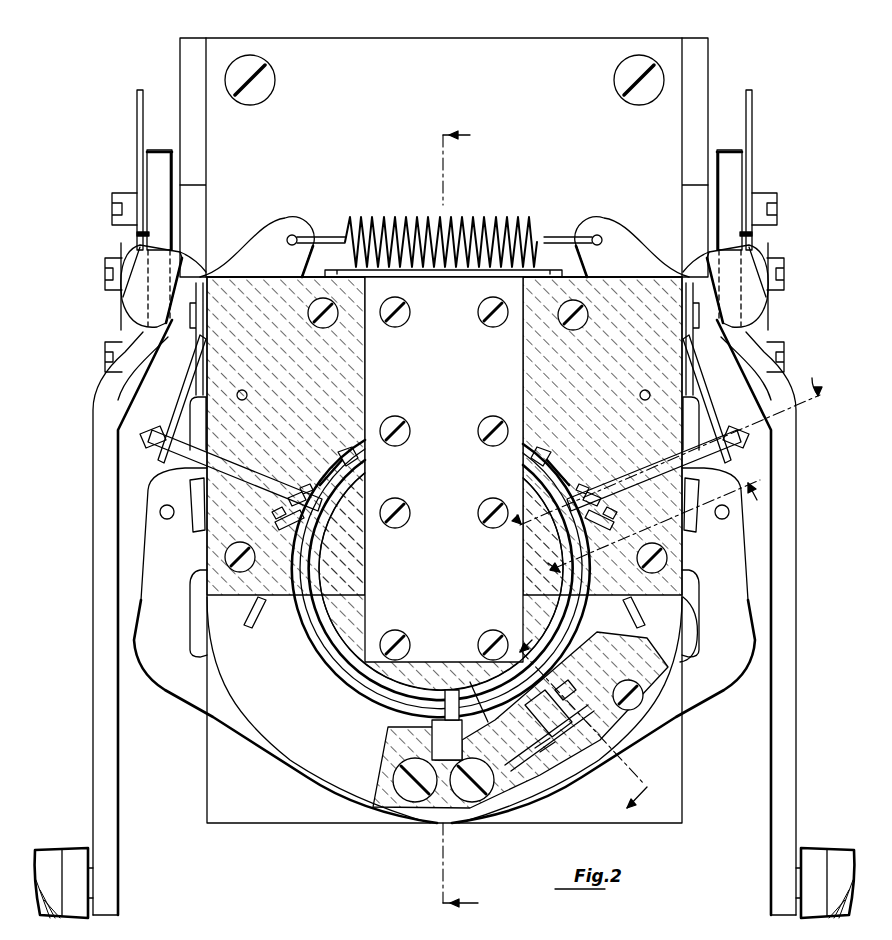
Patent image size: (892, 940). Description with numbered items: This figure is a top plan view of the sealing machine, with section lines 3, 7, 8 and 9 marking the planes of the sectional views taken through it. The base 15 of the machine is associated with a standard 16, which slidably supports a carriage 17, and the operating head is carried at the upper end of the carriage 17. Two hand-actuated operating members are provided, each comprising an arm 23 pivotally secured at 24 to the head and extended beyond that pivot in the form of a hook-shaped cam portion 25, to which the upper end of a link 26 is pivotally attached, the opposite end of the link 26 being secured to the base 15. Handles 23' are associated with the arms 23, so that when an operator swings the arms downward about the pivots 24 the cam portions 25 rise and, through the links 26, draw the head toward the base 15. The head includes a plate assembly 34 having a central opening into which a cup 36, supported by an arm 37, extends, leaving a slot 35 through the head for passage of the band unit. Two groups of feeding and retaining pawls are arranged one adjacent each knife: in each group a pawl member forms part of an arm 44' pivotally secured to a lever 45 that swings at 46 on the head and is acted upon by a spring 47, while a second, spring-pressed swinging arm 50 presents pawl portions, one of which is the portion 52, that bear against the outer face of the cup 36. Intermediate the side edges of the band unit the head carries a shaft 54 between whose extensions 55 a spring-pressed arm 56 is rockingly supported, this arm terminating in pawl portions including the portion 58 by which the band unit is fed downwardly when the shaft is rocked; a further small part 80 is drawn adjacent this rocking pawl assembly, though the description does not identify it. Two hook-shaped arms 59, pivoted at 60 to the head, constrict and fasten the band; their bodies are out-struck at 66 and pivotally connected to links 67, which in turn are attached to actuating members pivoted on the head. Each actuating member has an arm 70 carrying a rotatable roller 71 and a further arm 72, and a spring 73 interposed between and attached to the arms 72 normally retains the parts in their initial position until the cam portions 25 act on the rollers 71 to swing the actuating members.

The section line 3- 3 is at (469, 519).
The section line 7- 7 is at (666, 441).
The section line 8- 8 is at (593, 712).
The section line 9- 9 is at (649, 516).
The base 15 is at (444, 550).
The standard 16 is at (444, 157).
The carriage 17 is at (204, 380).
The arm 23 is at (441, 617).
The handle 23' is at (445, 869).
The pivot 24 is at (700, 262).
The hook-shaped cam portion 25 is at (160, 160).
The link 26 is at (139, 92).
The plate assembly 34 is at (444, 436).
The slot 35 is at (306, 638).
The cup 36 is at (441, 568).
The arm 37 is at (444, 469).
The arm 44' is at (445, 484).
The lever 45 is at (240, 465).
The pivot 46 is at (195, 531).
The spring 47 is at (170, 460).
The swinging arm 50 is at (285, 527).
The pawl portion 52 is at (447, 695).
The shaft 54 is at (690, 636).
The extensions 55 is at (532, 751).
The spring-pressed arm 56 is at (471, 690).
The pawl portion 58 is at (531, 712).
The hook-shaped arm 59 is at (444, 696).
The pivot 60 is at (395, 782).
The out-struck portion 66 is at (158, 500).
The link 67 is at (203, 423).
The arm 70 is at (190, 282).
The roller 71 is at (125, 305).
The arm 72 is at (292, 222).
The spring 73 is at (478, 226).
The stop 80 is at (576, 685).